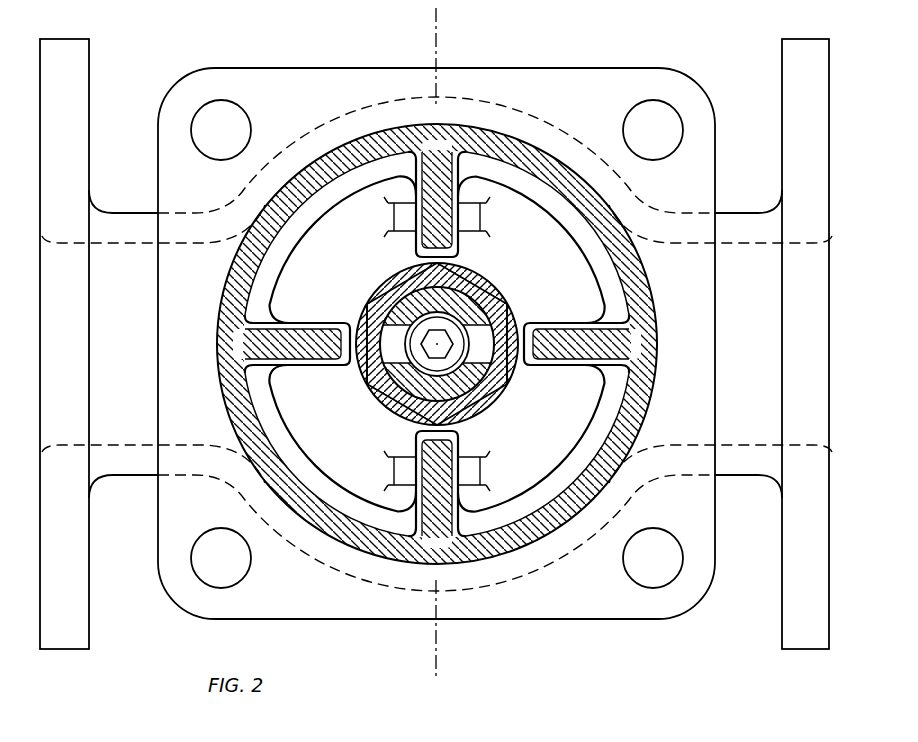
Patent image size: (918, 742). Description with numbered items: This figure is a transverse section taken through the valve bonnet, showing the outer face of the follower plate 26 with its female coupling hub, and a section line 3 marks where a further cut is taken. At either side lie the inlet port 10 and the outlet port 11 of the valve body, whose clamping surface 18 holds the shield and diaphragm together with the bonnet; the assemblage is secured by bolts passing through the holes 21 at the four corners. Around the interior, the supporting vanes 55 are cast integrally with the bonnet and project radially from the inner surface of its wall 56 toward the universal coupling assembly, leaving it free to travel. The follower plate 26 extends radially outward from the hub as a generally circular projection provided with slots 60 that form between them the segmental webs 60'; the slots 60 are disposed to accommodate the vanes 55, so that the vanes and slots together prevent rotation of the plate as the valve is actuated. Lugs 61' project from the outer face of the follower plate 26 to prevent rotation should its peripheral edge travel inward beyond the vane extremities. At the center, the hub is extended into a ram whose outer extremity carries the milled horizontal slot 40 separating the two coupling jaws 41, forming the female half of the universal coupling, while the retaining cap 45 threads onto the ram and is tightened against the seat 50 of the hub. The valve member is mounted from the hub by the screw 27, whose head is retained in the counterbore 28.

The section line 3- 3 is at (438, 656).
The inlet port 10 is at (99, 344).
The outlet port 11 is at (772, 344).
The surface 18 is at (540, 68).
The holes 21 is at (662, 122).
The follower plate 26 is at (355, 502).
The screw 27 is at (368, 385).
The counterbore 28 is at (396, 401).
The milled horizontal slot 40 is at (480, 338).
The coupling jaws 41 is at (404, 312).
The retaining cap 45 is at (498, 380).
The seat 50 is at (477, 293).
The supporting vanes 55 is at (570, 340).
The wall 56 is at (347, 208).
The slots 60 is at (383, 216).
The segmental webs 60' is at (435, 325).
The lugs 61' is at (437, 344).